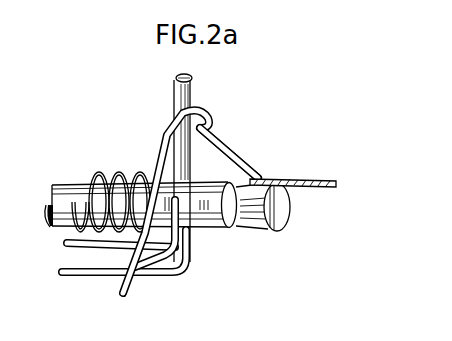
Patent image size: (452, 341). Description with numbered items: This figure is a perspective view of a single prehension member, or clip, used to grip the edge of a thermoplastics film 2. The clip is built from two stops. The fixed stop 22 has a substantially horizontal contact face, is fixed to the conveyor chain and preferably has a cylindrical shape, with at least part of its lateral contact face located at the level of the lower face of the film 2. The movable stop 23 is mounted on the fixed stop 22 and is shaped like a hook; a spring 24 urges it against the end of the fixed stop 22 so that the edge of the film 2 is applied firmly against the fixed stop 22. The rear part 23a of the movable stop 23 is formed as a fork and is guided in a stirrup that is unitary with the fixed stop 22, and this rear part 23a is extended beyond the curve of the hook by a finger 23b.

The thermoplastics film 2 is at (301, 180).
The fixed stop 22 is at (282, 210).
The movable stop 23 is at (212, 136).
The rear part 23a is at (133, 243).
The finger 23b is at (186, 88).
The spring 24 is at (94, 176).